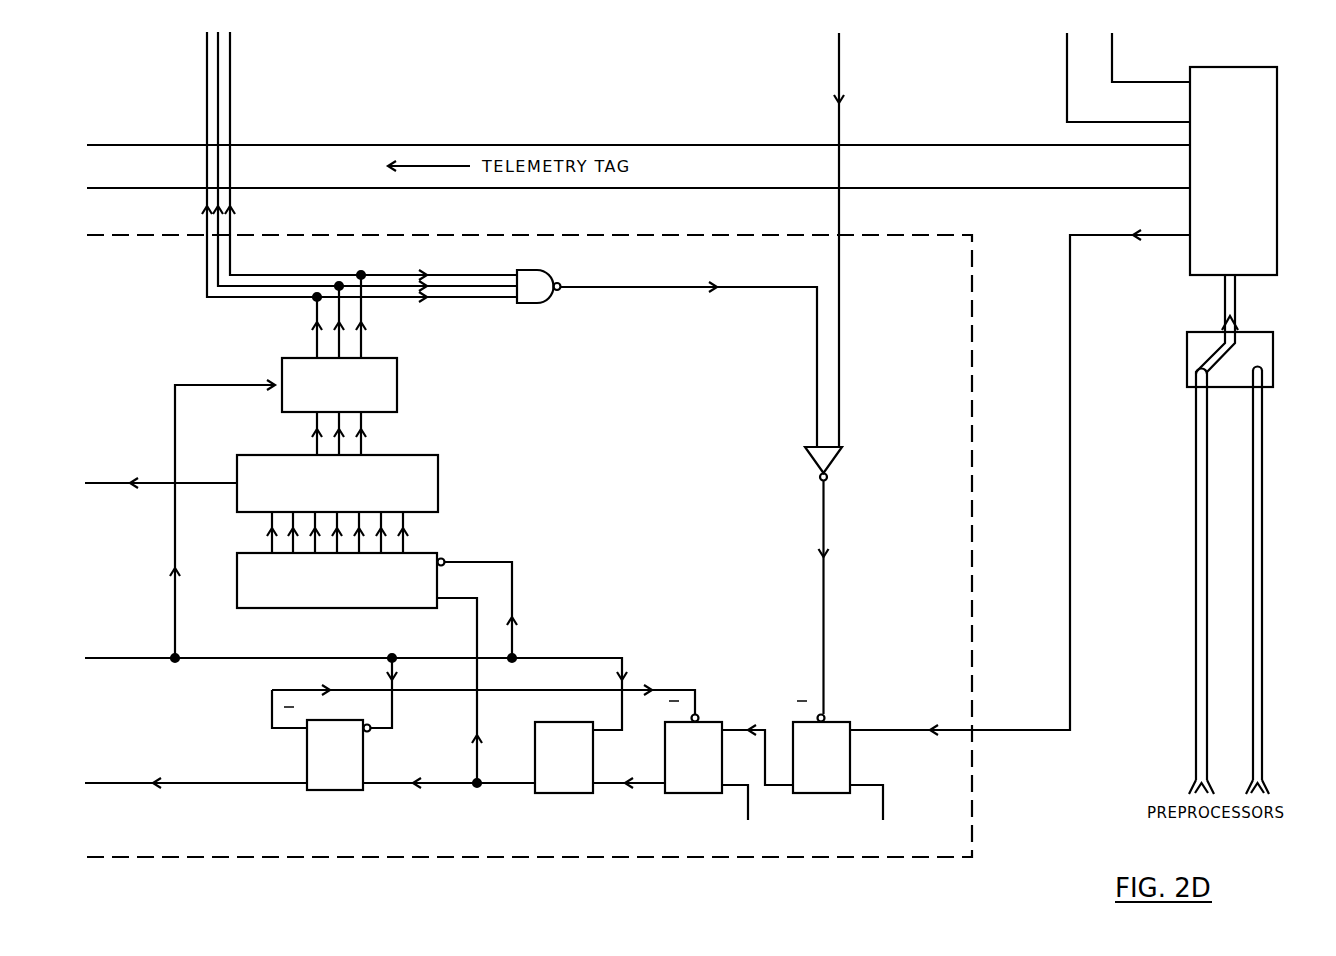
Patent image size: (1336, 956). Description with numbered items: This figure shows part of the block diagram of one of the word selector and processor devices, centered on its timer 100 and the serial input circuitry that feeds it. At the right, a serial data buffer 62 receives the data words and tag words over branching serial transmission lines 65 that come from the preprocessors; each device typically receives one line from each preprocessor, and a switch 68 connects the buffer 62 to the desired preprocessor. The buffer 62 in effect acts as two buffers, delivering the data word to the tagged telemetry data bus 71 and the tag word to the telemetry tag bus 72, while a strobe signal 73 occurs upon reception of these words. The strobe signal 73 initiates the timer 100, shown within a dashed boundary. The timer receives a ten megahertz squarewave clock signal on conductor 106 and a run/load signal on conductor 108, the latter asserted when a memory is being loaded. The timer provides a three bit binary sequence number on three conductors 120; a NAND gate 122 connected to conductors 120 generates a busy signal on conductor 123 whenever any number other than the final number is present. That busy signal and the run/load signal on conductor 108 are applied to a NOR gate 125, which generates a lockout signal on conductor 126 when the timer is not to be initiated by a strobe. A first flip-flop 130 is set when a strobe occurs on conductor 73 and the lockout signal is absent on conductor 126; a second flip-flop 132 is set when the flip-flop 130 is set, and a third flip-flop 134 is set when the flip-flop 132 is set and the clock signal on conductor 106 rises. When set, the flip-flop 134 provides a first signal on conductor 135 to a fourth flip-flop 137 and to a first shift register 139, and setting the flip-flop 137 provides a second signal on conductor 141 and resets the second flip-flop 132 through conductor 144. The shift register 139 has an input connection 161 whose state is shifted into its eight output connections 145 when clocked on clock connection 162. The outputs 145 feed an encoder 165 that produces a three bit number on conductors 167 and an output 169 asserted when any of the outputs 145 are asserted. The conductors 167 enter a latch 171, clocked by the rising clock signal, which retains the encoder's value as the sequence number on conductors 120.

The serial data buffer 62 is at (1262, 252).
The serial transmission lines 65 is at (1205, 680).
The switch 68 is at (1275, 367).
The tagged telemetry data bus 71 is at (1080, 93).
The telemetry tag bus 72 is at (993, 165).
The strobe signal 73 is at (1069, 275).
The timer 100 is at (972, 437).
The conductor 106 is at (592, 636).
The conductor 108 is at (839, 80).
The conductors 120 is at (272, 297).
The NAND gate 122 is at (528, 298).
The conductor 123 is at (640, 287).
The NOR gate 125 is at (830, 459).
The conductor 126 is at (824, 577).
The first flip-flop 130 is at (840, 722).
The second flip-flop 132 is at (710, 722).
The third flip-flop 134 is at (575, 793).
The conductor 135 is at (455, 748).
The fourth flip-flop 137 is at (327, 791).
The first shift register 139 is at (344, 618).
The conductor 141 is at (110, 783).
The conductor 144 is at (510, 690).
The output connections 145 is at (360, 524).
The input connection 161 is at (440, 605).
The clock connection 162 is at (445, 560).
The encoder 165 is at (440, 465).
The conductors 167 is at (318, 420).
The output 169 is at (188, 484).
The latch 171 is at (388, 367).